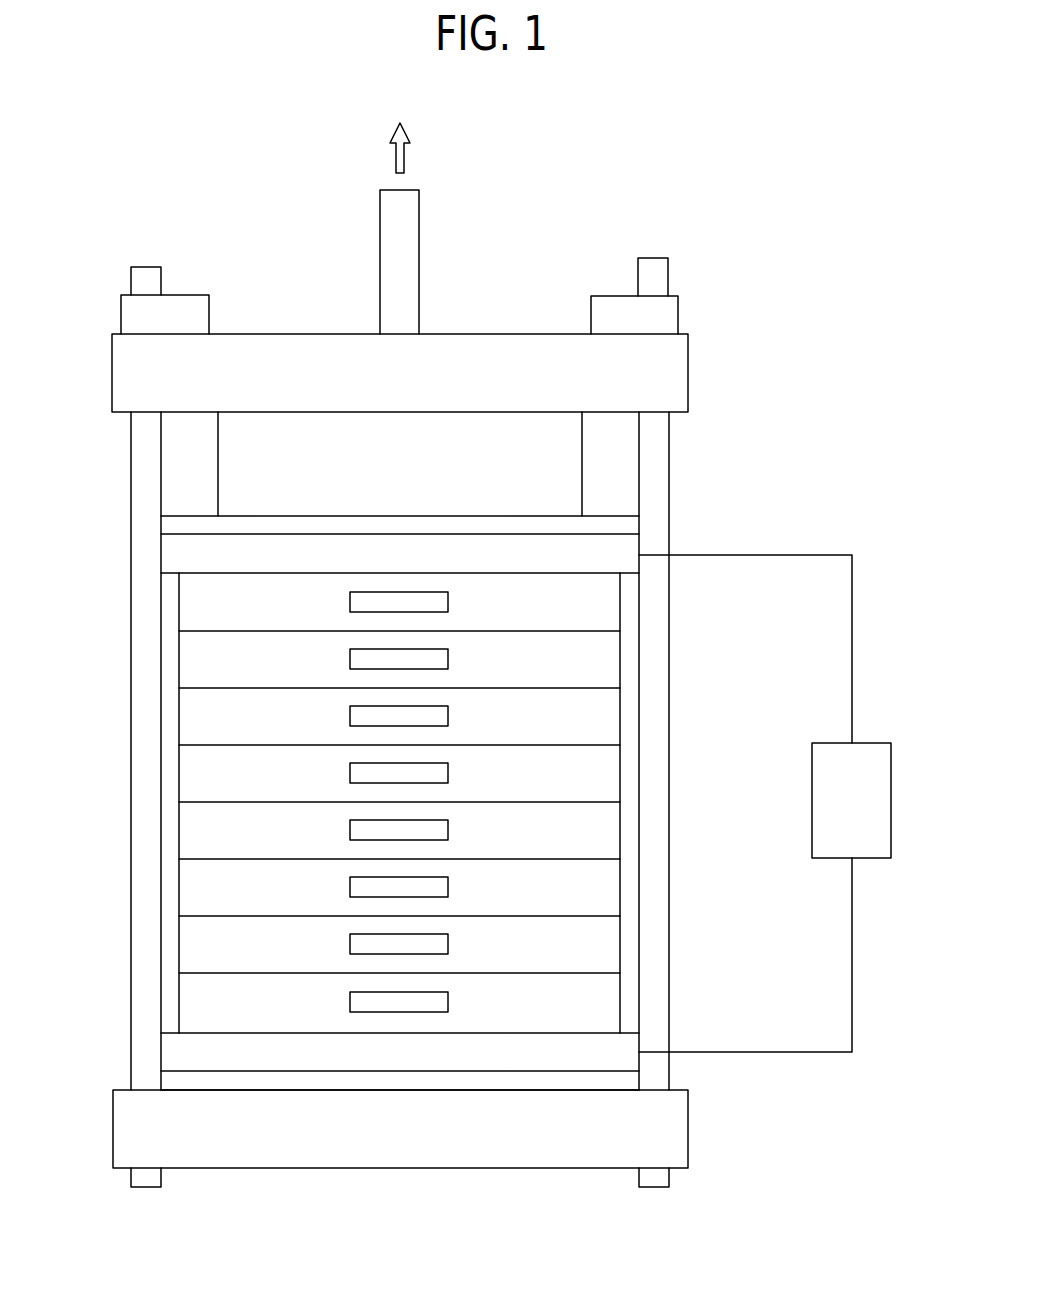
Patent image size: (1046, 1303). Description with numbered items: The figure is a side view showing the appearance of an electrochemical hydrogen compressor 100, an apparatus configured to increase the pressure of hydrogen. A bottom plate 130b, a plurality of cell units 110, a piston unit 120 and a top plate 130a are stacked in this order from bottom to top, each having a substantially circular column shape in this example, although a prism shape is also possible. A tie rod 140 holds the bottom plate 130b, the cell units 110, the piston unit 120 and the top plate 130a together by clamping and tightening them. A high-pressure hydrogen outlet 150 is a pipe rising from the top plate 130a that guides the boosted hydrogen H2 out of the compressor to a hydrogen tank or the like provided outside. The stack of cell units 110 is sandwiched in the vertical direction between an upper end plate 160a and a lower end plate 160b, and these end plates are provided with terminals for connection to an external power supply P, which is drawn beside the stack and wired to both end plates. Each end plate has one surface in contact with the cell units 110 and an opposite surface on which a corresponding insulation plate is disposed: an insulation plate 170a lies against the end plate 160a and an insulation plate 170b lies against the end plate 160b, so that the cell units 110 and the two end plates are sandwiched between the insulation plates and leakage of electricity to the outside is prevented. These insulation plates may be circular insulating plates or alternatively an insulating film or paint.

The electrochemical hydrogen compressor 100 is at (141, 212).
The cell unit 110 is at (602, 602).
The piston unit 120 is at (548, 487).
The top plate 130a is at (673, 372).
The bottom plate 130b is at (675, 1128).
The tie rod 140 is at (655, 450).
The high-pressure hydrogen outlet 150 is at (403, 264).
The end plate 160a is at (168, 551).
The end plate 160b is at (168, 1047).
The insulation plate 170a is at (168, 523).
The insulation plate 170b is at (168, 1077).
The external power supply P is at (873, 800).
The hydrogen gas H2 is at (405, 160).